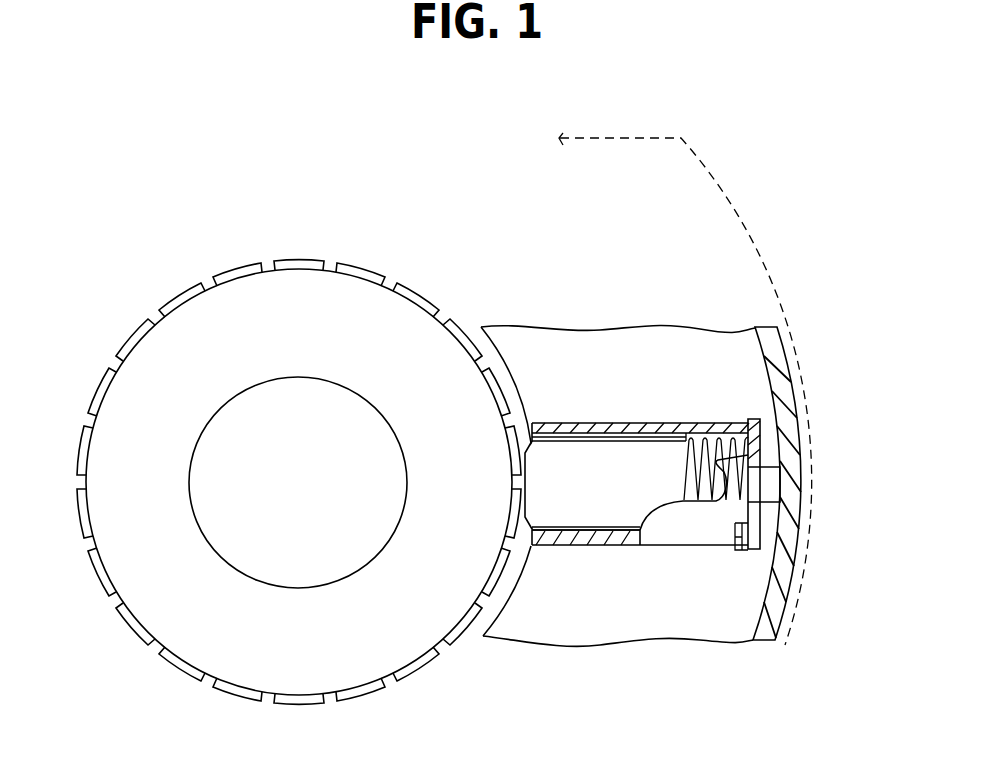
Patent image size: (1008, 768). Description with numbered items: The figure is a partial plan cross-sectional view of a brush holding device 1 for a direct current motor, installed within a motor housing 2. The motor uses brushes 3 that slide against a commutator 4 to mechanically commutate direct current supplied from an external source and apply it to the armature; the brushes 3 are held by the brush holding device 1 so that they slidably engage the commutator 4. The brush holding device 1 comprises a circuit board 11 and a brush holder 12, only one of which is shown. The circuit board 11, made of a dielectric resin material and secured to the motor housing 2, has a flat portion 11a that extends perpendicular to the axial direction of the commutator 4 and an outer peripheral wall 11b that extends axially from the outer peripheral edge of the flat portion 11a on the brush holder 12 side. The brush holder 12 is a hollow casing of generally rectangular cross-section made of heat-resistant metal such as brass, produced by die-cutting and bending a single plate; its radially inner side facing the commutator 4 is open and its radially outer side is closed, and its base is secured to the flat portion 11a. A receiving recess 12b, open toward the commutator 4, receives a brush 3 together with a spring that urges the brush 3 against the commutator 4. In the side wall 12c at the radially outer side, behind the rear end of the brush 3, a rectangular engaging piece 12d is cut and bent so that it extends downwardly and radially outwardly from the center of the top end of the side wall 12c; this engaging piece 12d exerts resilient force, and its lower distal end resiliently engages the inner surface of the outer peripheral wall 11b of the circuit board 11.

The brush holding device 1 is at (609, 279).
The motor housing 2 is at (612, 133).
The brush 3 is at (584, 546).
The commutator 4 is at (346, 262).
The circuit board 11 is at (691, 338).
The flat portion 11a is at (641, 641).
The outer peripheral wall 11b is at (752, 641).
The brush holder 12 is at (638, 422).
The receiving recess 12b is at (562, 443).
The side wall 12c is at (758, 530).
The engaging piece 12d is at (770, 485).